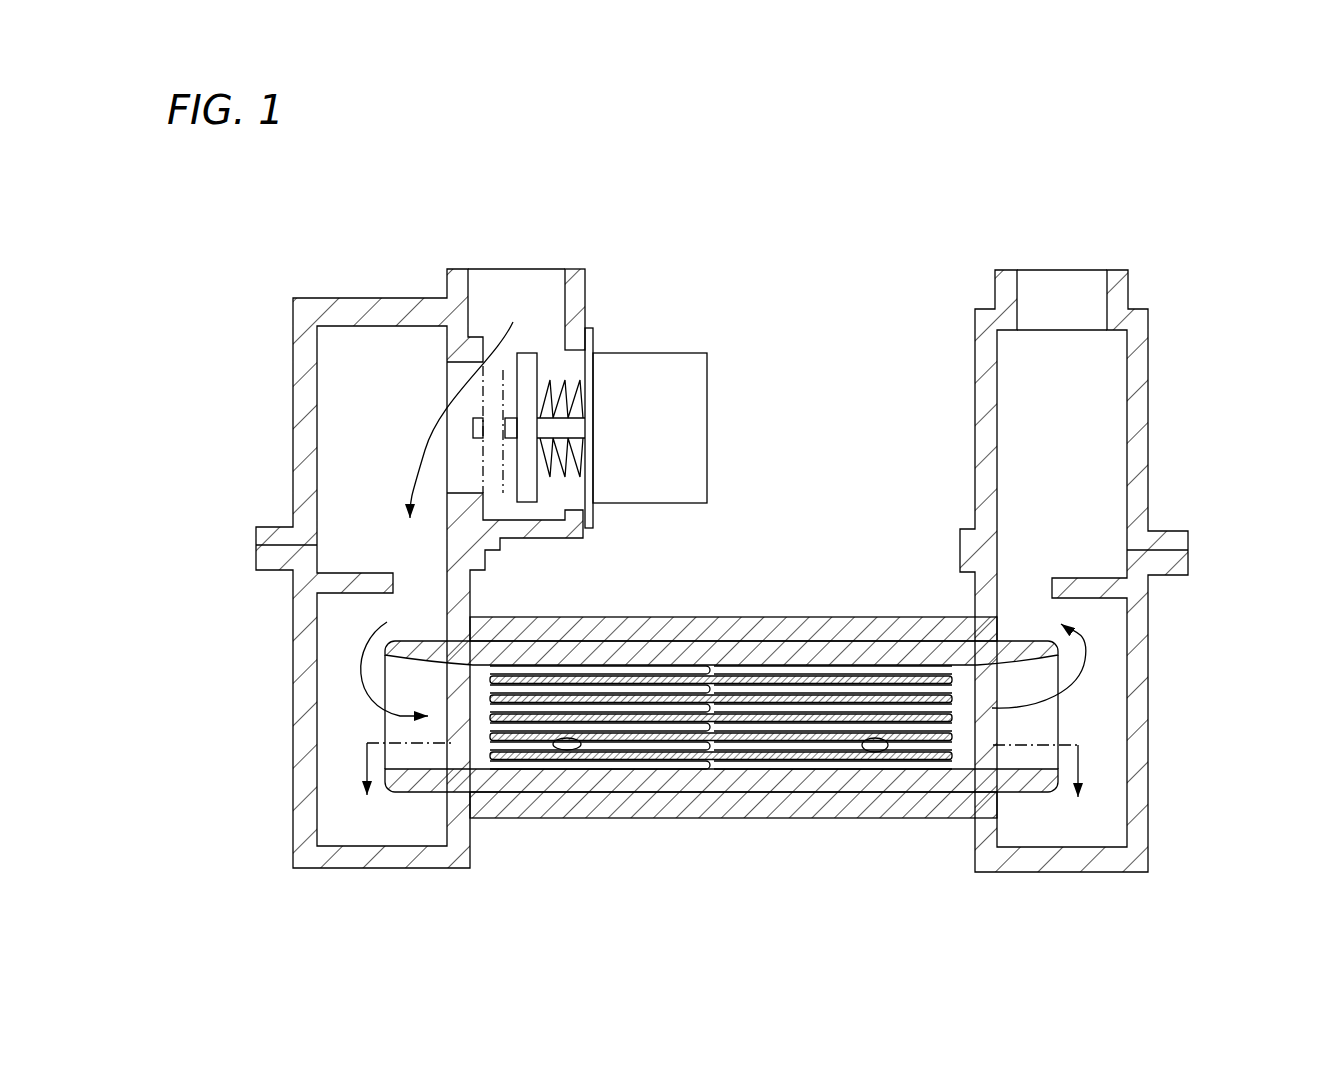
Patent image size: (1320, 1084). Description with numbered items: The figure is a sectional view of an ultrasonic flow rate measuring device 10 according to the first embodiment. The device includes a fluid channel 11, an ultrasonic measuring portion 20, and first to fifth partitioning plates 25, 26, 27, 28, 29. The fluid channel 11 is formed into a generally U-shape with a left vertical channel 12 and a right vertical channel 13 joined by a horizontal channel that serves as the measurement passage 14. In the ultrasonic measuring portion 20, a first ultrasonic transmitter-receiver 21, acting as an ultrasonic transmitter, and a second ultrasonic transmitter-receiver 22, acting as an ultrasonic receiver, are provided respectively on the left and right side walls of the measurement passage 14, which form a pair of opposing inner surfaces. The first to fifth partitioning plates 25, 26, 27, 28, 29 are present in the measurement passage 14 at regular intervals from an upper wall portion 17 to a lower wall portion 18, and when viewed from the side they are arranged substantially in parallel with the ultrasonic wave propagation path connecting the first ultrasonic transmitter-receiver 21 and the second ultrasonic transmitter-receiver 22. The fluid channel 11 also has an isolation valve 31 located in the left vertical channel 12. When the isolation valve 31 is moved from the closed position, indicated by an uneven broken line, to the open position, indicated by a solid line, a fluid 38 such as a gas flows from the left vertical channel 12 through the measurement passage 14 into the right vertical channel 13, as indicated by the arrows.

The ultrasonic flow rate measuring device 10 is at (776, 260).
The fluid channel 11 is at (378, 283).
The left vertical channel 12 is at (302, 438).
The right vertical channel 13 is at (1140, 418).
The measurement passage 14 is at (698, 823).
The upper wall portion 17 is at (583, 648).
The lower wall portion 18 is at (632, 776).
The ultrasonic measuring portion 20 is at (707, 607).
The first ultrasonic transmitter-receiver 21 is at (571, 752).
The second ultrasonic transmitter-receiver 22 is at (937, 818).
The first partitioning plate 25 is at (797, 677).
The second partitioning plate 26 is at (847, 690).
The third partitioning plate 27 is at (903, 712).
The fourth partitioning plate 28 is at (820, 737).
The fifth partitioning plate 29 is at (848, 757).
The isolation valve 31 is at (483, 366).
The fluid 38 is at (723, 728).